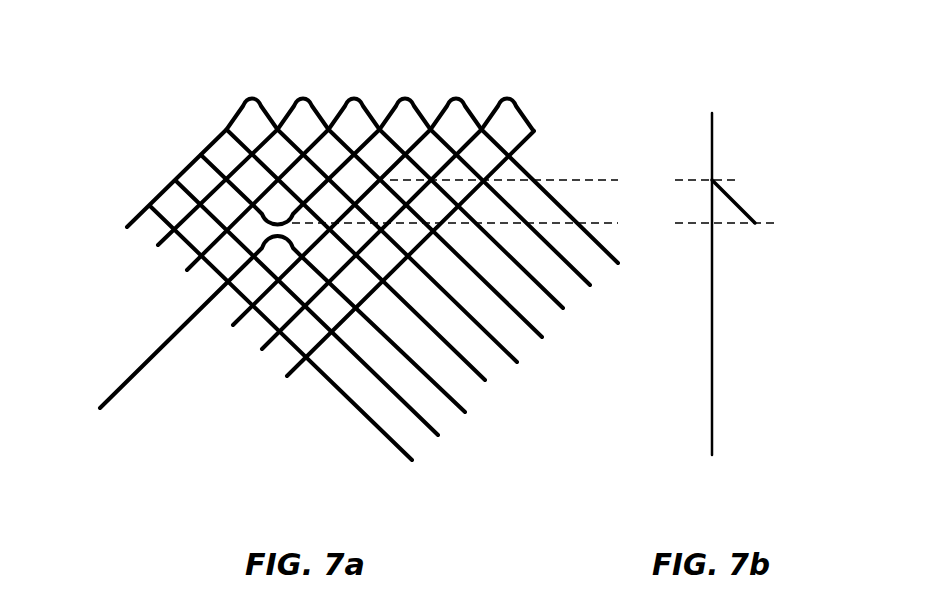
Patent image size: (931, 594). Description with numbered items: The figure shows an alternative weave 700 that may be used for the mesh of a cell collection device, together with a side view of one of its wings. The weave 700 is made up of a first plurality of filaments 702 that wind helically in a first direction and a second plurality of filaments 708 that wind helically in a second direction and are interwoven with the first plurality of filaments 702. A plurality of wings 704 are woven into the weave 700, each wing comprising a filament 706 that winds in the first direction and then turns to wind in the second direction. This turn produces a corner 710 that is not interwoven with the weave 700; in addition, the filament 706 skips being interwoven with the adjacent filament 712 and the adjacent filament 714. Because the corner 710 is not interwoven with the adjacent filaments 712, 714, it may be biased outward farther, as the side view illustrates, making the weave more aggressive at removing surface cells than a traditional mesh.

In FIG. 7A, the weave 700 is at (136, 161).
In FIG. 7A, the first plurality of filaments 702 is at (547, 287).
In FIG. 7A, the wings 704 is at (285, 216).
In FIG. 7B, the wings 704 is at (723, 190).
In FIG. 7A, the filament 706 is at (333, 181).
In FIG. 7A, the second plurality of filaments 708 is at (288, 376).
In FIG. 7A, the corner 710 is at (275, 218).
In FIG. 7A, the adjacent filament 712 is at (467, 369).
In FIG. 7A, the adjacent filament 714 is at (190, 268).